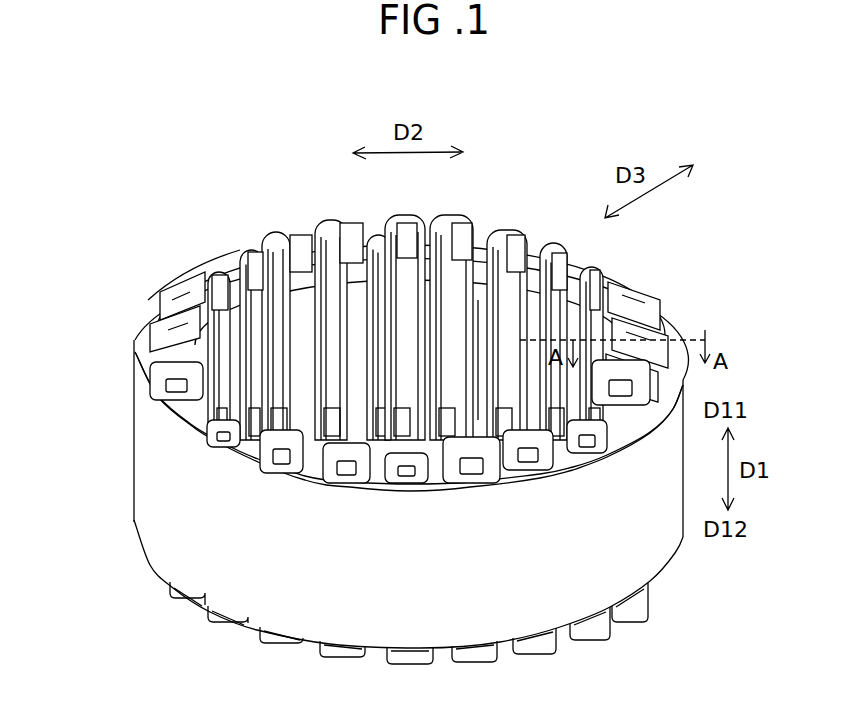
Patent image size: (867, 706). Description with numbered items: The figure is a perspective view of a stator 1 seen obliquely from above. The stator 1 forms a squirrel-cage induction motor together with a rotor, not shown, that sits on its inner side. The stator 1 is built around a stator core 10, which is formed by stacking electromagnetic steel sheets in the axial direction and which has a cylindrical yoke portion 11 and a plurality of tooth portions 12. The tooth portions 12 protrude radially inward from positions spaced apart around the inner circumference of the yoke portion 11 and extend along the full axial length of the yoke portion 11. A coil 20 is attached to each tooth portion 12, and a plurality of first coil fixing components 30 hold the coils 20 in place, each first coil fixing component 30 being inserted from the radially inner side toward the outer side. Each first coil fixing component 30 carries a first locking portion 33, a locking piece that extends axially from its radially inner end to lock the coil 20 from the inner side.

The stator 1 is at (163, 226).
The stator core 10 is at (160, 502).
The yoke portion 11 is at (148, 458).
The tooth portion 12 is at (463, 278).
The coil 20 is at (628, 279).
The first coil fixing component 30 is at (369, 226).
The first locking portion 33 is at (345, 223).